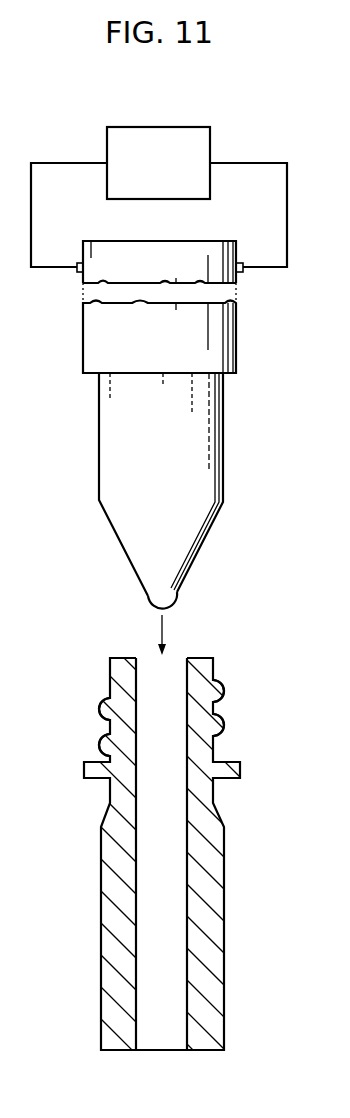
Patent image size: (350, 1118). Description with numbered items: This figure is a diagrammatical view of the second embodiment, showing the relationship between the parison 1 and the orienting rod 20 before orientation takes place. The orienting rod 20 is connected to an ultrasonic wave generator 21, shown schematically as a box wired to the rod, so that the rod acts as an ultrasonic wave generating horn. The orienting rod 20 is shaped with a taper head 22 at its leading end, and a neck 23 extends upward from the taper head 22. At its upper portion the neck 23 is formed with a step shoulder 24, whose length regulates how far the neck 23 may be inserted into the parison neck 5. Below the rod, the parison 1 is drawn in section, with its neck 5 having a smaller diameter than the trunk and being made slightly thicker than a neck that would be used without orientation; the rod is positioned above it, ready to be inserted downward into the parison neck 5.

The receptacle 1 is at (228, 871).
The neck 5 is at (207, 709).
The orienting rod 20 is at (226, 478).
The ultrasonic wave generator 21 is at (162, 127).
The taper head 22 is at (152, 593).
The neck 23 is at (112, 436).
The step shoulder 24 is at (227, 377).